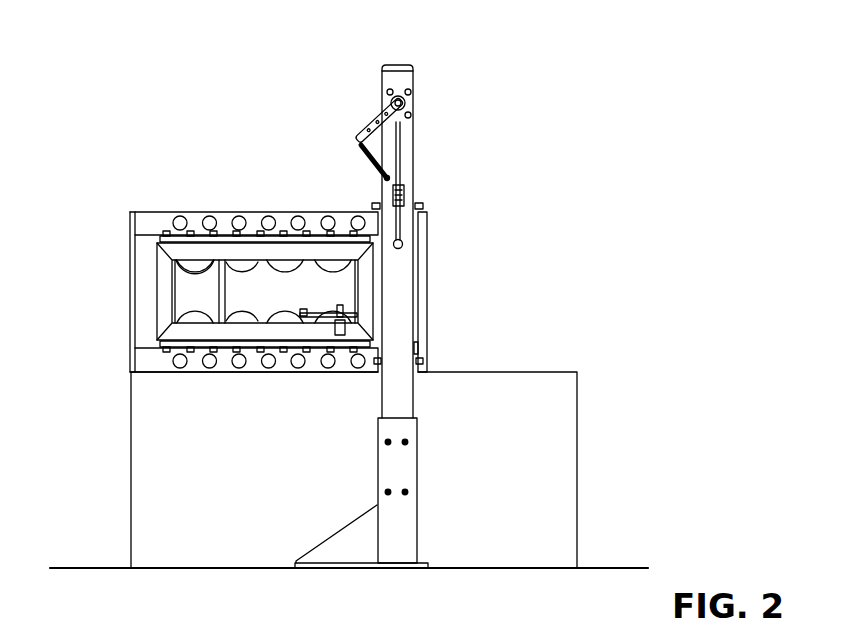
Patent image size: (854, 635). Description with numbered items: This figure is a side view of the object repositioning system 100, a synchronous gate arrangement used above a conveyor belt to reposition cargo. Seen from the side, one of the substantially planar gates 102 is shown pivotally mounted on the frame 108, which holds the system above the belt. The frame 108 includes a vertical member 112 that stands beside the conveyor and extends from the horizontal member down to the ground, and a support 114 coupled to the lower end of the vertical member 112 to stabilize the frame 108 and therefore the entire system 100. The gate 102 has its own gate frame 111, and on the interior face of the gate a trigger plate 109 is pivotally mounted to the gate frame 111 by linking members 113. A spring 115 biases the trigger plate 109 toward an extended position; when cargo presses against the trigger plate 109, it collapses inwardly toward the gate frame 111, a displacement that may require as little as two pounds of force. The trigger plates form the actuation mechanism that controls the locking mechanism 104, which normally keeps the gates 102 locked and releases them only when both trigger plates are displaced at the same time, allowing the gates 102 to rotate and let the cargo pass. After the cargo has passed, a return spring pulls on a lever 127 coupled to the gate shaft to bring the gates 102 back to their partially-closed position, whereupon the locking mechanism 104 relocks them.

The object repositioning system 100 is at (54, 118).
The gates 102 is at (220, 165).
The locking mechanism 104 is at (430, 358).
The frame 108 is at (430, 80).
The trigger plate 109 is at (195, 215).
The gate frame 111 is at (160, 290).
The vertical member 112 is at (408, 177).
The linking member 113 is at (315, 240).
The support 114 is at (407, 542).
The spring 115 is at (313, 305).
The lever 127 is at (367, 124).